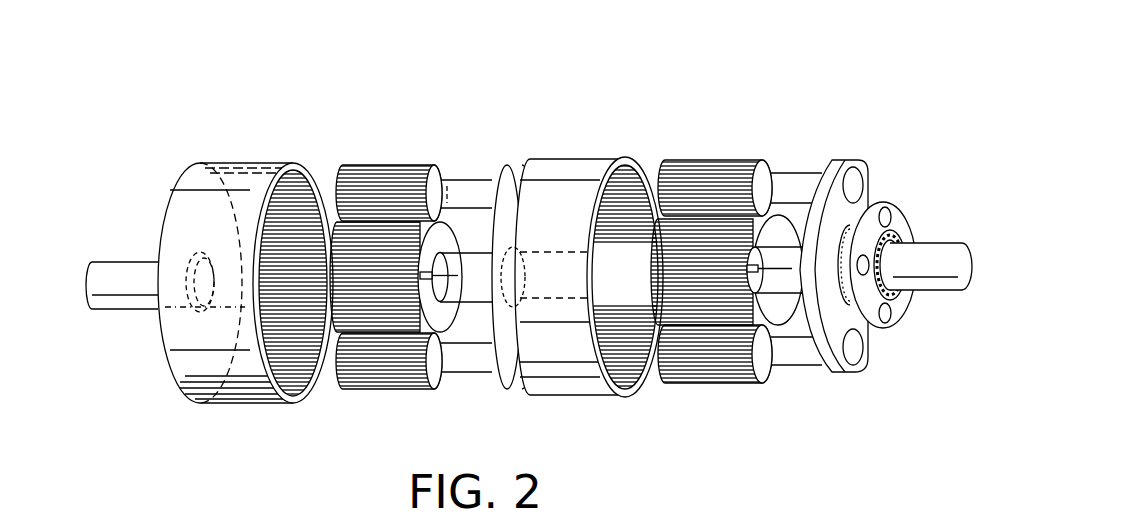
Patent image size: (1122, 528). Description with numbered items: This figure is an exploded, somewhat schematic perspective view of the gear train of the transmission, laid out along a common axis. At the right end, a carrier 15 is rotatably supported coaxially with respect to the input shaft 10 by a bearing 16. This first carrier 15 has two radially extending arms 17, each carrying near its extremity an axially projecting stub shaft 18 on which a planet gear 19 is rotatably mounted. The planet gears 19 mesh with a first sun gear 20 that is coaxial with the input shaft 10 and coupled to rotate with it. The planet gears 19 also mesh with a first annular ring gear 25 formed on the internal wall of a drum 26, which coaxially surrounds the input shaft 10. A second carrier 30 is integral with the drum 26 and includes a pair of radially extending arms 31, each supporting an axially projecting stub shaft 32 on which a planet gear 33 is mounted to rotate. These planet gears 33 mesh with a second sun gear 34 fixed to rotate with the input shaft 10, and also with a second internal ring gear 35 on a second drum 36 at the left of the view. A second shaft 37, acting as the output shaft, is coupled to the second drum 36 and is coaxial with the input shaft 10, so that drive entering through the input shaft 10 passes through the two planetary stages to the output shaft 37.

The input shaft 10 is at (920, 245).
The carrier 15 is at (878, 203).
The bearing 16 is at (897, 303).
The arm 17 is at (835, 162).
The stub shaft 18 is at (792, 173).
The planet gear 19 is at (718, 175).
The first sun gear 20 is at (677, 317).
The first annular ring gear 25 is at (623, 190).
The drum 26 is at (567, 165).
The second carrier 30 is at (497, 160).
The arm 31 is at (511, 165).
The stub shaft 32 is at (458, 180).
The planet gear 33 is at (392, 173).
The second sun gear 34 is at (343, 333).
The second internal ring gear 35 is at (300, 185).
The second drum 36 is at (175, 172).
The second shaft 37 is at (127, 262).